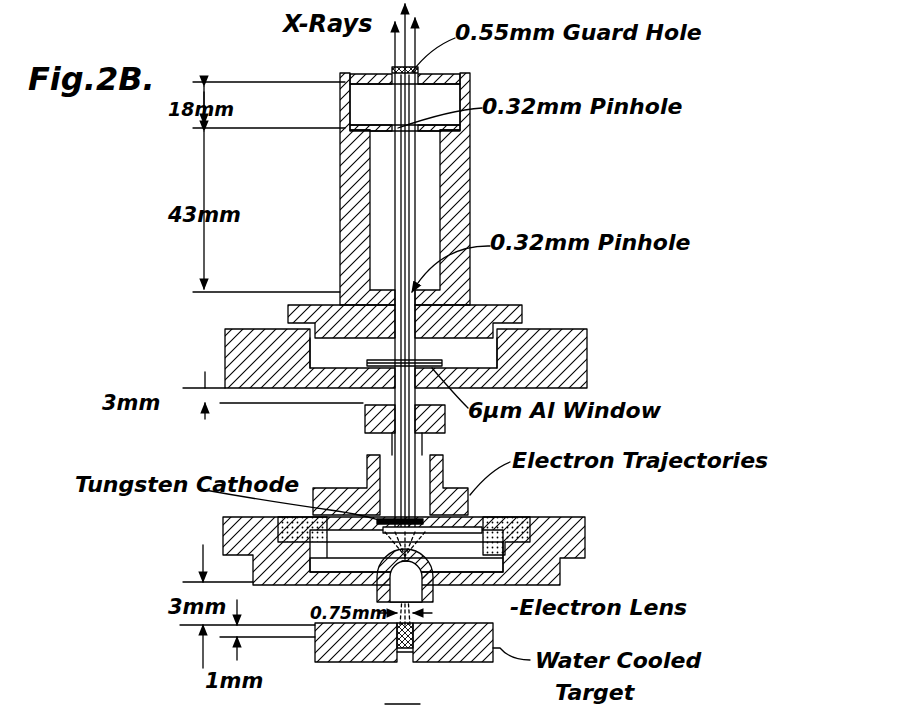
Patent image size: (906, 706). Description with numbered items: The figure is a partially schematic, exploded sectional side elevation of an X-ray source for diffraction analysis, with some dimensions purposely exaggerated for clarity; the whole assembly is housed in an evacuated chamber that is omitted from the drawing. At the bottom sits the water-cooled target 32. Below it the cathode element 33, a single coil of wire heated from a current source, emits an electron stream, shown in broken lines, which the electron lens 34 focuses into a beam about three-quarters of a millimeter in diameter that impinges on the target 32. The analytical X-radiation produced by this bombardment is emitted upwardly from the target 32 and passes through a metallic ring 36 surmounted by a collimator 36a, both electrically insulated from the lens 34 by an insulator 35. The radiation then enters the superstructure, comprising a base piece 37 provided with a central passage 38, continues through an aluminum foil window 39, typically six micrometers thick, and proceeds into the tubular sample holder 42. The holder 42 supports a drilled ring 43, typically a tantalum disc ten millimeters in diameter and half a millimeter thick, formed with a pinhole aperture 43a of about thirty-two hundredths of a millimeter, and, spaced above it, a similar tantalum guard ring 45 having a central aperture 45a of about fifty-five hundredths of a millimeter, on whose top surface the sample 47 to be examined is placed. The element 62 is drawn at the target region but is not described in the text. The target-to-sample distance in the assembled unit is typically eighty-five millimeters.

The water-cooled target 32 is at (410, 652).
The cathode element 33 is at (478, 524).
The electron lens 34 is at (435, 596).
The insulator 35 is at (505, 545).
The metallic ring 36 is at (447, 482).
The collimator 36a is at (366, 430).
The base piece 37 is at (578, 368).
The central passage 38 is at (366, 365).
The aluminum foil window 39 is at (500, 318).
The tubular sample holder 42 is at (476, 186).
The drilled ring 43 is at (450, 122).
The pinhole aperture 43a is at (395, 133).
The guard ring 45 is at (450, 75).
The central aperture 45a is at (400, 86).
The sample 47 is at (386, 68).
The target holder 62 is at (395, 705).